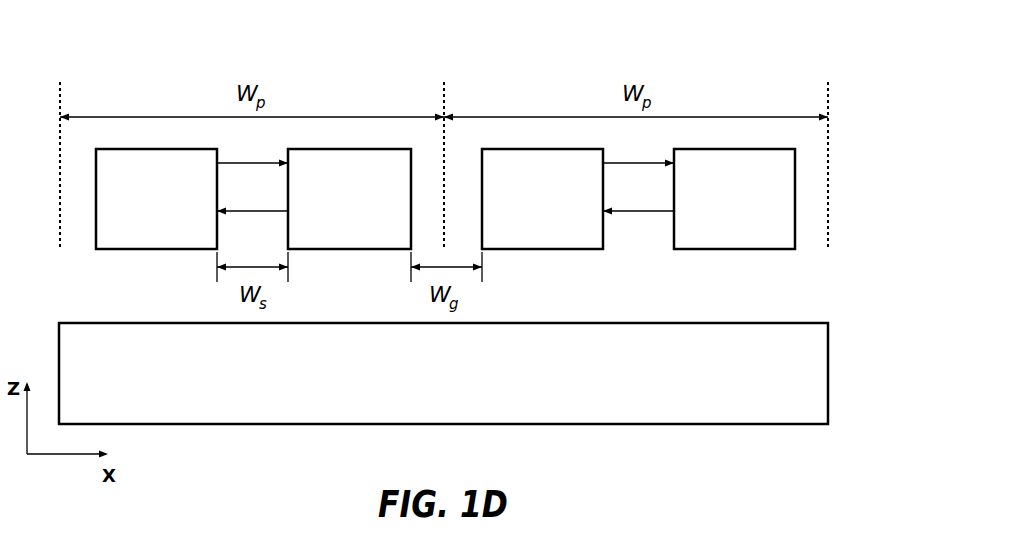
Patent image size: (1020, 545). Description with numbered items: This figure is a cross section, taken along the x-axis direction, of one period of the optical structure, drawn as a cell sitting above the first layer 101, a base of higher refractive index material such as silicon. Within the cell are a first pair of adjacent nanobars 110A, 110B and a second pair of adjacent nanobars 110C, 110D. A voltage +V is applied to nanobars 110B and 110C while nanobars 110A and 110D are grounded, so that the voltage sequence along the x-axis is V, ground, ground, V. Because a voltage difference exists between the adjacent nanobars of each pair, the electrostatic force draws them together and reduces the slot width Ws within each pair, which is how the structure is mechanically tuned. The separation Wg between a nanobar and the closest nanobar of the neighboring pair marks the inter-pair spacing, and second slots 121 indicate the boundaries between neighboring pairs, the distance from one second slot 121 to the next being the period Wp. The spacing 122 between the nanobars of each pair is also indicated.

The first layer 101 is at (798, 377).
The nanobar 110A is at (387, 158).
The nanobar 110B is at (165, 158).
The nanobar 110C is at (723, 158).
The nanobar 110D is at (500, 158).
The second slot 121 is at (457, 181).
The spacing between electrodes of a pair 122 is at (247, 183).